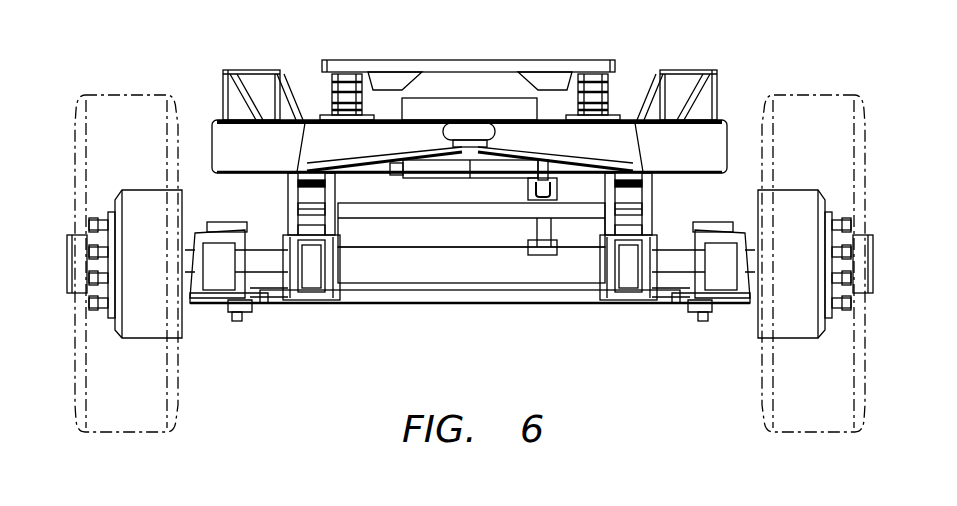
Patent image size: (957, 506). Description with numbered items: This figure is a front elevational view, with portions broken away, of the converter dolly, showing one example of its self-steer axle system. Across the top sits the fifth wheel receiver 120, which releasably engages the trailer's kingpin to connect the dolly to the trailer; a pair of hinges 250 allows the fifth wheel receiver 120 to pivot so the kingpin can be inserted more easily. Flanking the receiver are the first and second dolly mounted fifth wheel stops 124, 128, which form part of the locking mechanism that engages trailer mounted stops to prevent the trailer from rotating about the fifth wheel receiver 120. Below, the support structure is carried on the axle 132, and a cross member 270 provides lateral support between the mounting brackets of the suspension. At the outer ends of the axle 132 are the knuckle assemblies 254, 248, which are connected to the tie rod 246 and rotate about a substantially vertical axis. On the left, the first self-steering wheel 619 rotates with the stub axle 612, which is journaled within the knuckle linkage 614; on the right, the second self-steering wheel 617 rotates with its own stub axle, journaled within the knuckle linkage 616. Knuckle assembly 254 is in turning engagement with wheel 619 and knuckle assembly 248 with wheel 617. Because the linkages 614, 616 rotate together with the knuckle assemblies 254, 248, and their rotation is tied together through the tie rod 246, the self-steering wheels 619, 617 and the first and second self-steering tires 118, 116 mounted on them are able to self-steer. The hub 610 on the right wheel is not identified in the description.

The second self-steering tire 116 is at (840, 95).
The first self-steering tire 118 is at (95, 97).
The fifth wheel receiver 120 is at (396, 60).
The first dolly mounted fifth wheel stop 124 is at (712, 70).
The second dolly mounted fifth wheel stop 128 is at (232, 70).
The axle 132 is at (485, 273).
The tie rod 246 is at (400, 303).
The knuckle assembly 248 is at (703, 218).
The hinges 250 is at (330, 85).
The knuckle assembly 254 is at (238, 222).
The cross member 270 is at (420, 219).
The right hub 610 is at (758, 298).
The stub axle 612 is at (182, 300).
The knuckle linkage 614 is at (215, 312).
The knuckle linkage 616 is at (728, 312).
The second self-steering wheel 617 is at (805, 185).
The first self-steering wheel 619 is at (137, 190).